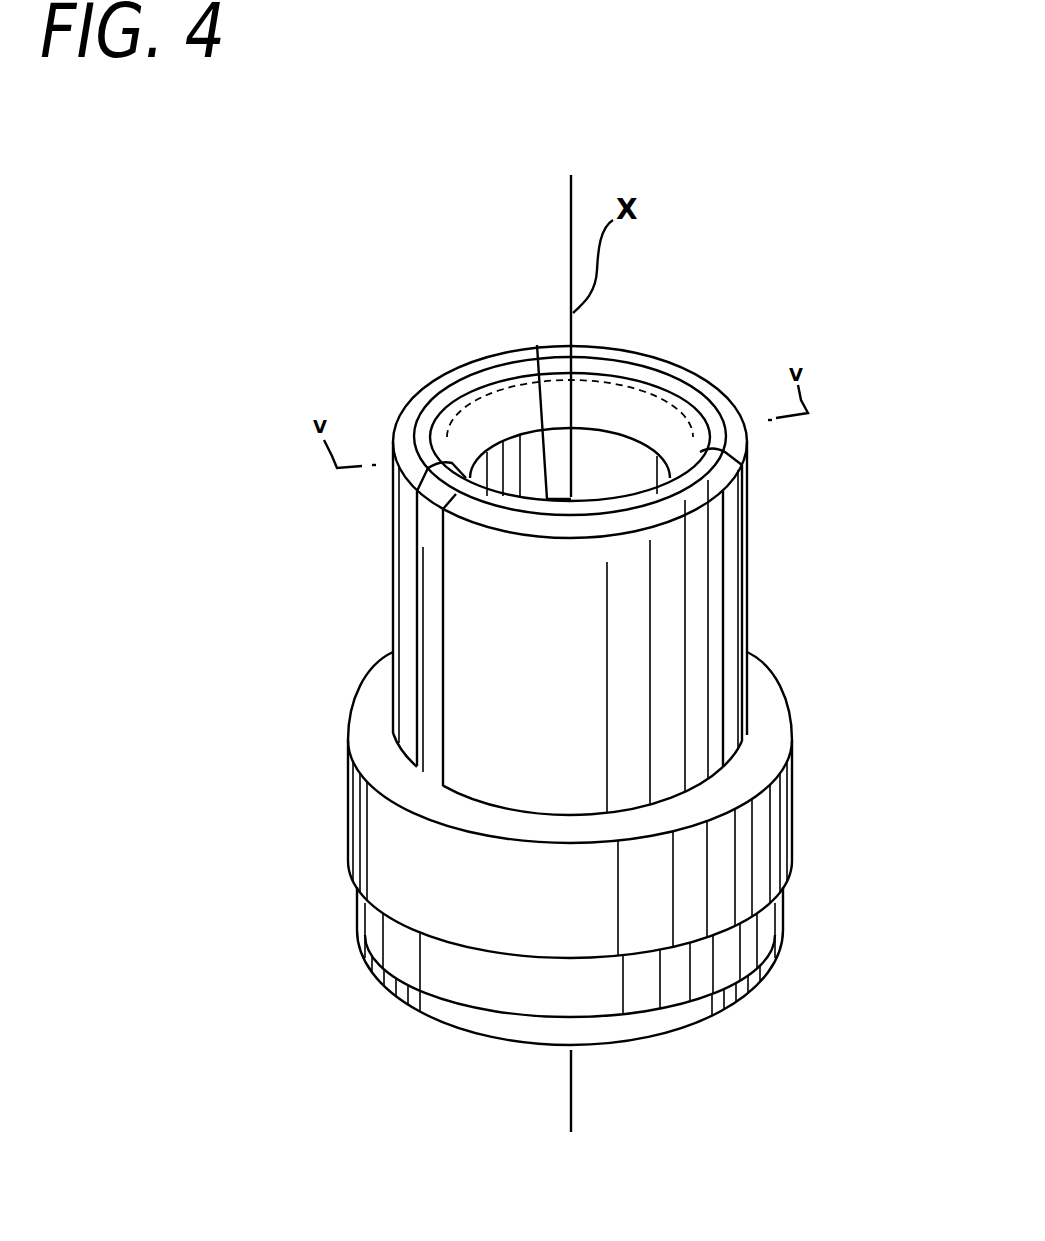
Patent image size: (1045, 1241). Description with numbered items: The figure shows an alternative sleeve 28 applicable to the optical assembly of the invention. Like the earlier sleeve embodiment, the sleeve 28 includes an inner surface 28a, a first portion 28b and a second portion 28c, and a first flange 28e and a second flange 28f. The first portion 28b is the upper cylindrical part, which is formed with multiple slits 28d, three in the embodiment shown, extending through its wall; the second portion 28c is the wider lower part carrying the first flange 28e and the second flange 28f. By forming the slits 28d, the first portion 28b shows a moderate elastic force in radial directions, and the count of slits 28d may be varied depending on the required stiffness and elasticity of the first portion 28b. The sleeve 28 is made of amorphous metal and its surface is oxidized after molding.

The sleeve 28 is at (831, 329).
The inner surface 28a is at (623, 470).
The first portion 28b is at (885, 397).
The second portion 28c is at (885, 702).
The slits 28d is at (557, 373).
The first flange 28e is at (410, 1003).
The second flange 28f is at (350, 820).